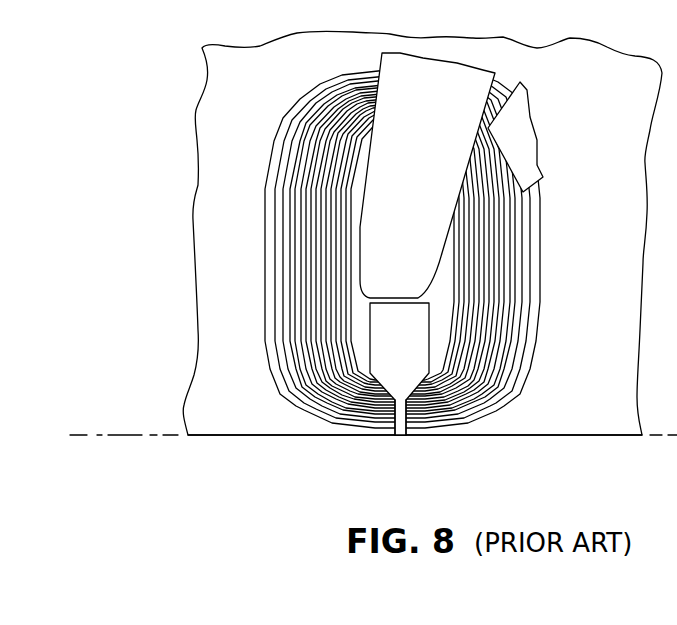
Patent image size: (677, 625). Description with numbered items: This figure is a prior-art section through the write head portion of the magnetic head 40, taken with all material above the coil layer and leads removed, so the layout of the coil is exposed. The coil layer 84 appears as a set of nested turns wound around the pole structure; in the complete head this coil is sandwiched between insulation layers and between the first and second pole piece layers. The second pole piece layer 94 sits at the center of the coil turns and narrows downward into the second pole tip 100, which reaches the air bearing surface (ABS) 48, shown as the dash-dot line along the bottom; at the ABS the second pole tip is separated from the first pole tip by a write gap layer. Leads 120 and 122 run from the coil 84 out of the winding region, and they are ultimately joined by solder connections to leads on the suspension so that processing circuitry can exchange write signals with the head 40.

The magnetic head 40 is at (553, 230).
The air bearing surface (ABS) 48 is at (127, 435).
The coil layer 84 is at (510, 327).
The second pole piece layer 94 is at (413, 356).
The second pole tip 100 is at (398, 437).
The lead 120 is at (431, 172).
The lead 122 is at (534, 130).